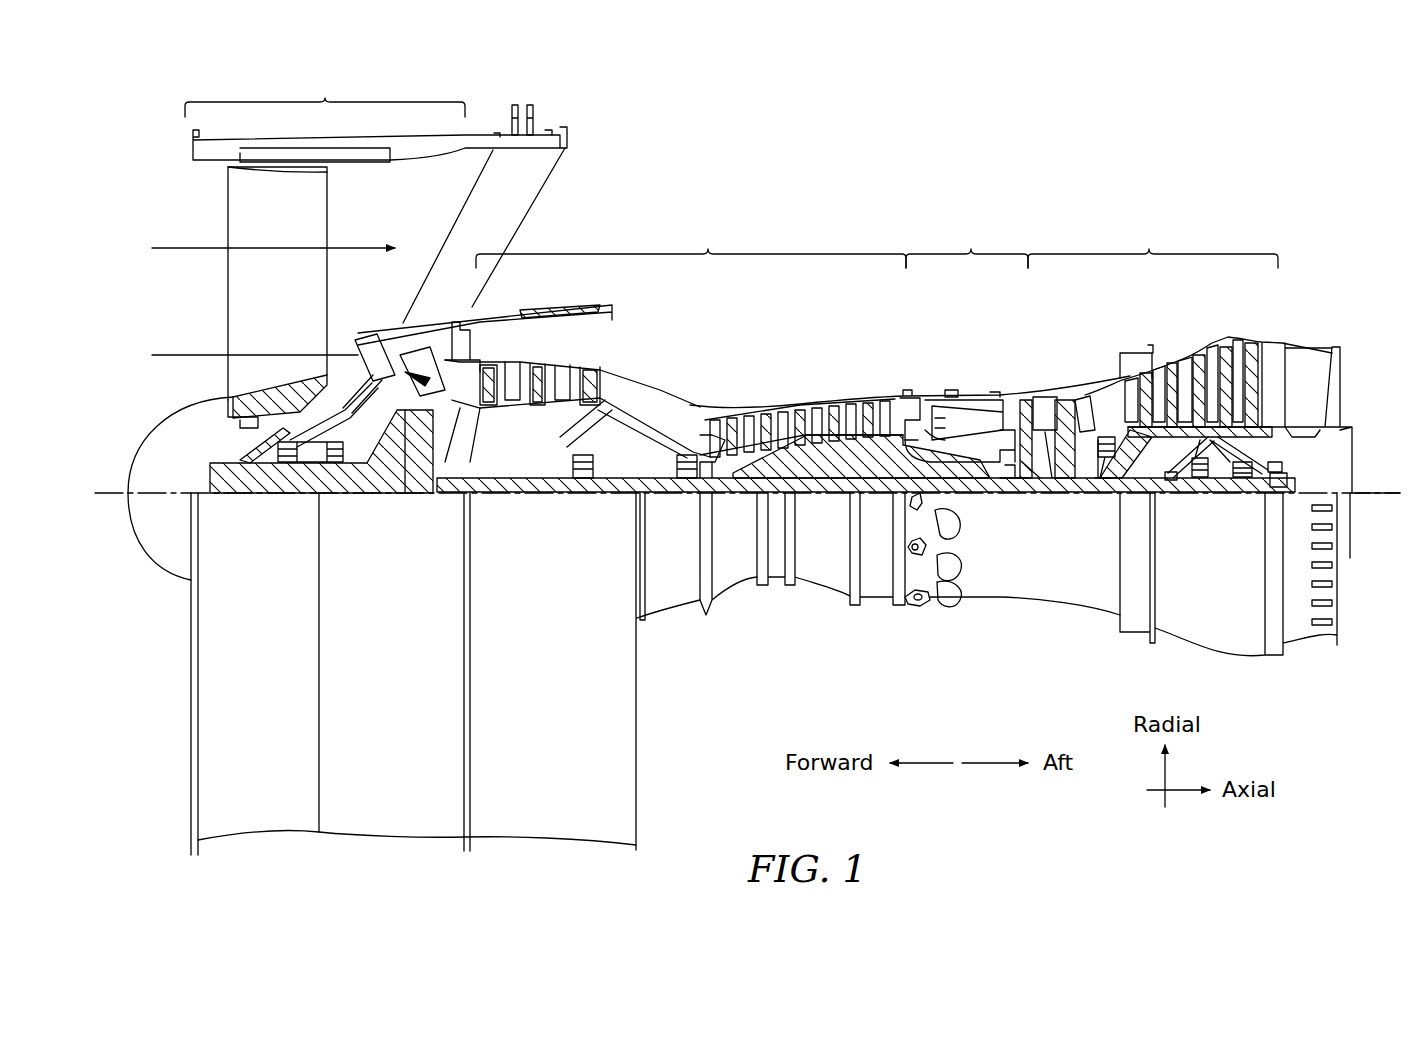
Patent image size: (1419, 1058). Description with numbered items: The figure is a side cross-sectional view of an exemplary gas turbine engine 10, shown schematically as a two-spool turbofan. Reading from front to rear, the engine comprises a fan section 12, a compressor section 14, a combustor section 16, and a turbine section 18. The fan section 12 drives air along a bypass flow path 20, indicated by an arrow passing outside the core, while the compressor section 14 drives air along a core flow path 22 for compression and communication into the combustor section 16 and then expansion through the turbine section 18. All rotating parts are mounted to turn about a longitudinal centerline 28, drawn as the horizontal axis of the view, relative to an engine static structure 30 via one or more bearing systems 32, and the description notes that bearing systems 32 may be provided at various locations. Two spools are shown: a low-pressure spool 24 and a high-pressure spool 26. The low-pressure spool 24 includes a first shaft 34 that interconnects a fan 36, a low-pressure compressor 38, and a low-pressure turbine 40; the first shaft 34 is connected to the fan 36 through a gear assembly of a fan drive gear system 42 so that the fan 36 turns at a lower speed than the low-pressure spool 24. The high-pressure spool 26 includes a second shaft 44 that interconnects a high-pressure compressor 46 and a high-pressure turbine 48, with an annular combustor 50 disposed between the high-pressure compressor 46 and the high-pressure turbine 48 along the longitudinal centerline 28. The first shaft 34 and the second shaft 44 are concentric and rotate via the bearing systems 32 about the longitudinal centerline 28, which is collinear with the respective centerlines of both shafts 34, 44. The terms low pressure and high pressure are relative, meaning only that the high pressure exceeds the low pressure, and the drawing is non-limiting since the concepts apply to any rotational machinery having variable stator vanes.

The gas turbine engine 10 is at (1305, 225).
The fan section 12 is at (382, 459).
The compressor section 14 is at (691, 242).
The combustor section 16 is at (967, 242).
The turbine section 18 is at (1153, 242).
The bypass flow path 20 is at (164, 248).
The core flow path 22 is at (160, 355).
The low-pressure spool 24 is at (824, 505).
The high-pressure spool 26 is at (787, 478).
The longitudinal centerline 28 is at (1373, 491).
The engine static structure 30 is at (879, 600).
The bearing systems 32 is at (1102, 490).
The first shaft 34 is at (658, 495).
The fan 36 is at (287, 293).
The low-pressure compressor 38 is at (553, 377).
The low-pressure turbine 40 is at (1198, 338).
The fan drive gear system 42 is at (420, 506).
The second shaft 44 is at (1018, 492).
The high-pressure compressor 46 is at (790, 417).
The high-pressure turbine 48 is at (1043, 400).
The annular combustor 50 is at (963, 427).